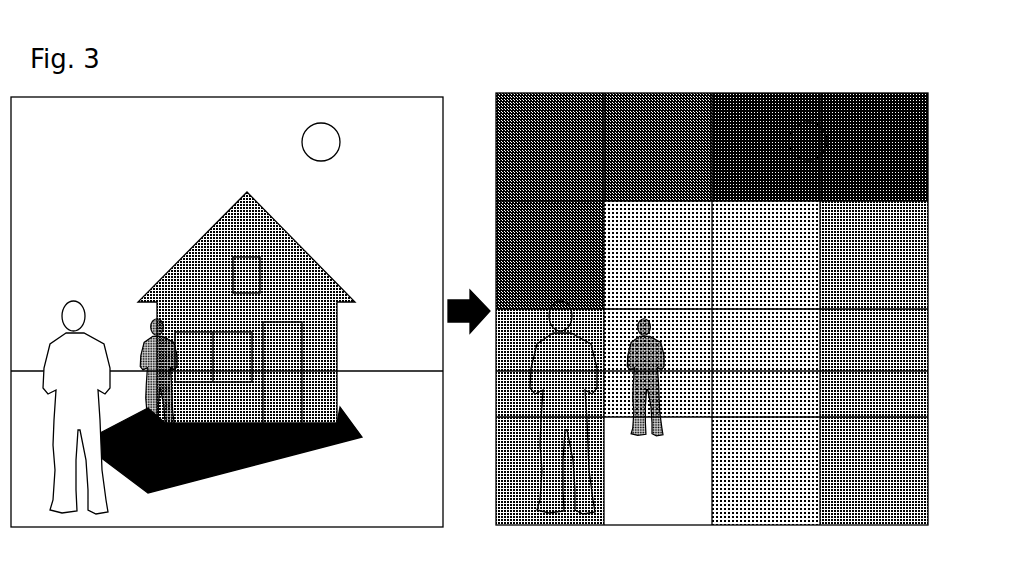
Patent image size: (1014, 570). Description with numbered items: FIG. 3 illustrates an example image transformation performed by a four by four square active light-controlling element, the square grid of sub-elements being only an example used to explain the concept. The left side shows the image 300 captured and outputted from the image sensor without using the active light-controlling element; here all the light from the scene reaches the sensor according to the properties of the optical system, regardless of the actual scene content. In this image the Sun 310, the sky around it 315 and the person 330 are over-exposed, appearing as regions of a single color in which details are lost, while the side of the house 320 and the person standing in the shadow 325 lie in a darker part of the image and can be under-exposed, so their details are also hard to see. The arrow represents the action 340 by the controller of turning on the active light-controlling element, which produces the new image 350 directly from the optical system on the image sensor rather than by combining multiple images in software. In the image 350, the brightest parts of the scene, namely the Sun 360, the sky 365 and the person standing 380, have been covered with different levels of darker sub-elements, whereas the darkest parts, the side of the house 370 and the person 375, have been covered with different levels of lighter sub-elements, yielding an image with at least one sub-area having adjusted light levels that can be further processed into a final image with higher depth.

The image captured without active light-controlling element 300 is at (227, 300).
The Sun 310 is at (321, 142).
The sky around the Sun 315 is at (227, 283).
The side of the house 320 is at (231, 342).
The person standing in the shadow 325 is at (158, 377).
The person 330 is at (76, 407).
The action of turning on the active light-controlling element 340 is at (469, 301).
The new image with adjusted light levels 350 is at (712, 297).
The Sun 360 is at (808, 141).
The sky 365 is at (550, 255).
The side of the house 370 is at (718, 342).
The person 375 is at (645, 377).
The person standing 380 is at (563, 407).